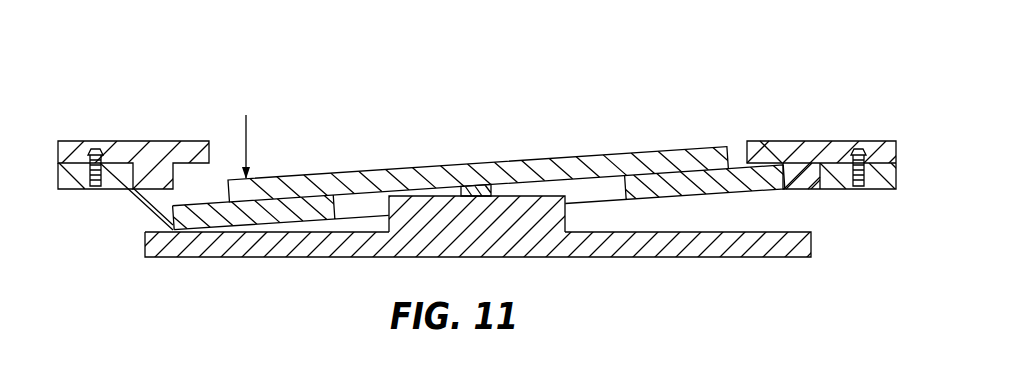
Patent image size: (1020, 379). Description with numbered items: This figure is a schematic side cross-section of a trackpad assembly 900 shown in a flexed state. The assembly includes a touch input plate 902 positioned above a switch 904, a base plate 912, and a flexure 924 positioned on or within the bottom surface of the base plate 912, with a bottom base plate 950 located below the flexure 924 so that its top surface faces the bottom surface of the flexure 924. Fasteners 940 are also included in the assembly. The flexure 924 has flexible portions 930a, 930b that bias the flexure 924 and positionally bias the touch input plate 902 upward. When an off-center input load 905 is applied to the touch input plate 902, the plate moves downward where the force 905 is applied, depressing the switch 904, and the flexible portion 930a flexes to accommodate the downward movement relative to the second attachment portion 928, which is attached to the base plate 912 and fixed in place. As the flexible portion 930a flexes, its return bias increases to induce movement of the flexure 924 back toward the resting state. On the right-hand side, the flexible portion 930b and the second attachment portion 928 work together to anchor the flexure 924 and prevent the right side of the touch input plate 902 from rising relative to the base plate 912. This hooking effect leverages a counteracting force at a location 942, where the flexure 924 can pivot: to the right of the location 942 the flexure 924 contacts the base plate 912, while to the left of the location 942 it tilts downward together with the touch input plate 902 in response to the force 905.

The trackpad assembly 900 is at (136, 50).
The touch input plate 902 is at (420, 174).
The switch 904 is at (481, 188).
The off-center input load 905 is at (247, 148).
The base plate 912 is at (157, 159).
The flexure 924 is at (695, 190).
The second attachment portion 928 is at (890, 195).
The flexible portion 930a is at (131, 214).
The flexible portion 930b is at (827, 196).
The fasteners 940 is at (94, 186).
The location 942 is at (758, 142).
The bottom base plate 950 is at (213, 258).